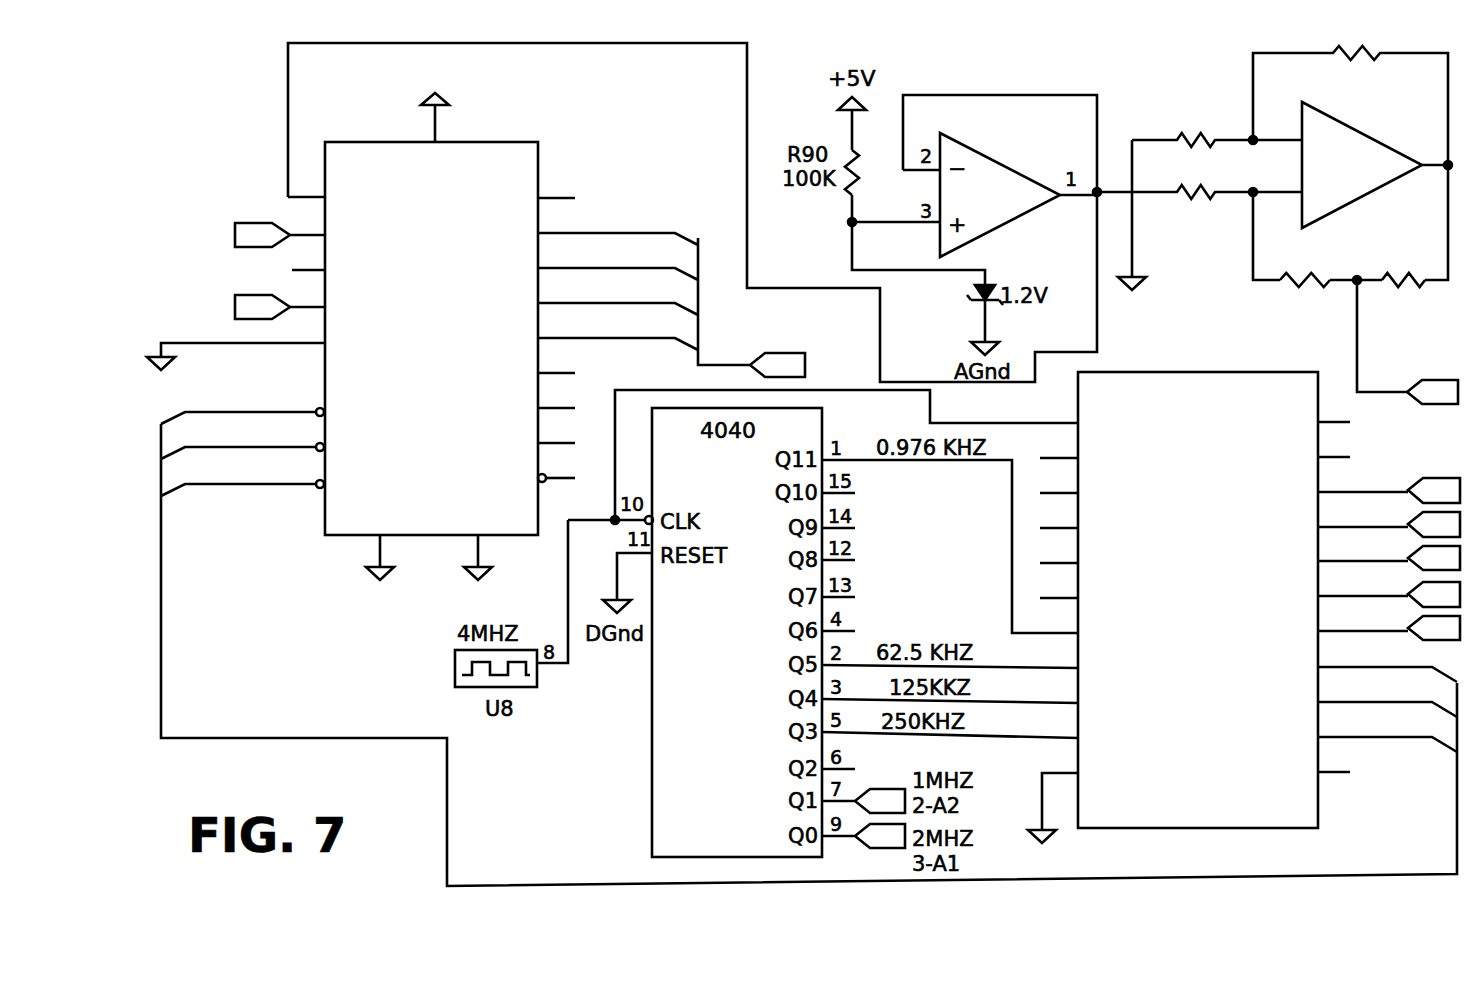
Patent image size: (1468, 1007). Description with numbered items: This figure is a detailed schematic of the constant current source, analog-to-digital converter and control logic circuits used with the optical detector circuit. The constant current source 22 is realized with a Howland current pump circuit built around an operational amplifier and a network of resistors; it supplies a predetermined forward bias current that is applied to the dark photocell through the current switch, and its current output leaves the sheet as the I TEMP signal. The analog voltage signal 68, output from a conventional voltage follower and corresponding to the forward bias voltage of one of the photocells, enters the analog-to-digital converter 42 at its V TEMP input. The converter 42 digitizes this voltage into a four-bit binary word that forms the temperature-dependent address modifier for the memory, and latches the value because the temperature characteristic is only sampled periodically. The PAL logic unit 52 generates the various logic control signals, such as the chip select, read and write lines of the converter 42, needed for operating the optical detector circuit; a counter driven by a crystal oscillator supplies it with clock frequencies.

The constant current source 22 is at (1457, 262).
The analog-to-digital converter 42 is at (530, 542).
The PAL logic unit 52 is at (1185, 372).
The analog voltage signal 68 is at (300, 303).